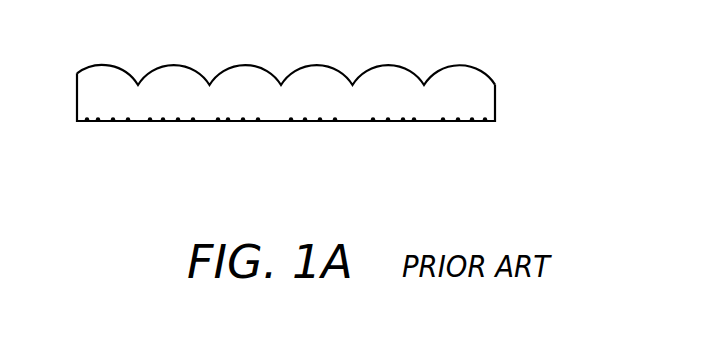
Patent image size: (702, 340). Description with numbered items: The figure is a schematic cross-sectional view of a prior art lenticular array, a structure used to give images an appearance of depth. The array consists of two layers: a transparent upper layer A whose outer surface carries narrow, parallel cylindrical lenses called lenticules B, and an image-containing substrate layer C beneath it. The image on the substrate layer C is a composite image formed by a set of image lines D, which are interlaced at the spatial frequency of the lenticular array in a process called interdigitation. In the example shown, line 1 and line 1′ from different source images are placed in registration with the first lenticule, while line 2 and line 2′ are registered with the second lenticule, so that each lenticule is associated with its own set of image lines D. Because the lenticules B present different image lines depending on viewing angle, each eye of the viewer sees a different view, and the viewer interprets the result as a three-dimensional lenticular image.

The image line 1 is at (87, 121).
The image line 1′ is at (98, 121).
The image line 2 is at (150, 121).
The image line 2′ is at (163, 121).
The lenticules B is at (393, 78).
The transparent upper layer A is at (508, 67).
The image-containing substrate layer C is at (508, 97).
The image lines D is at (414, 121).